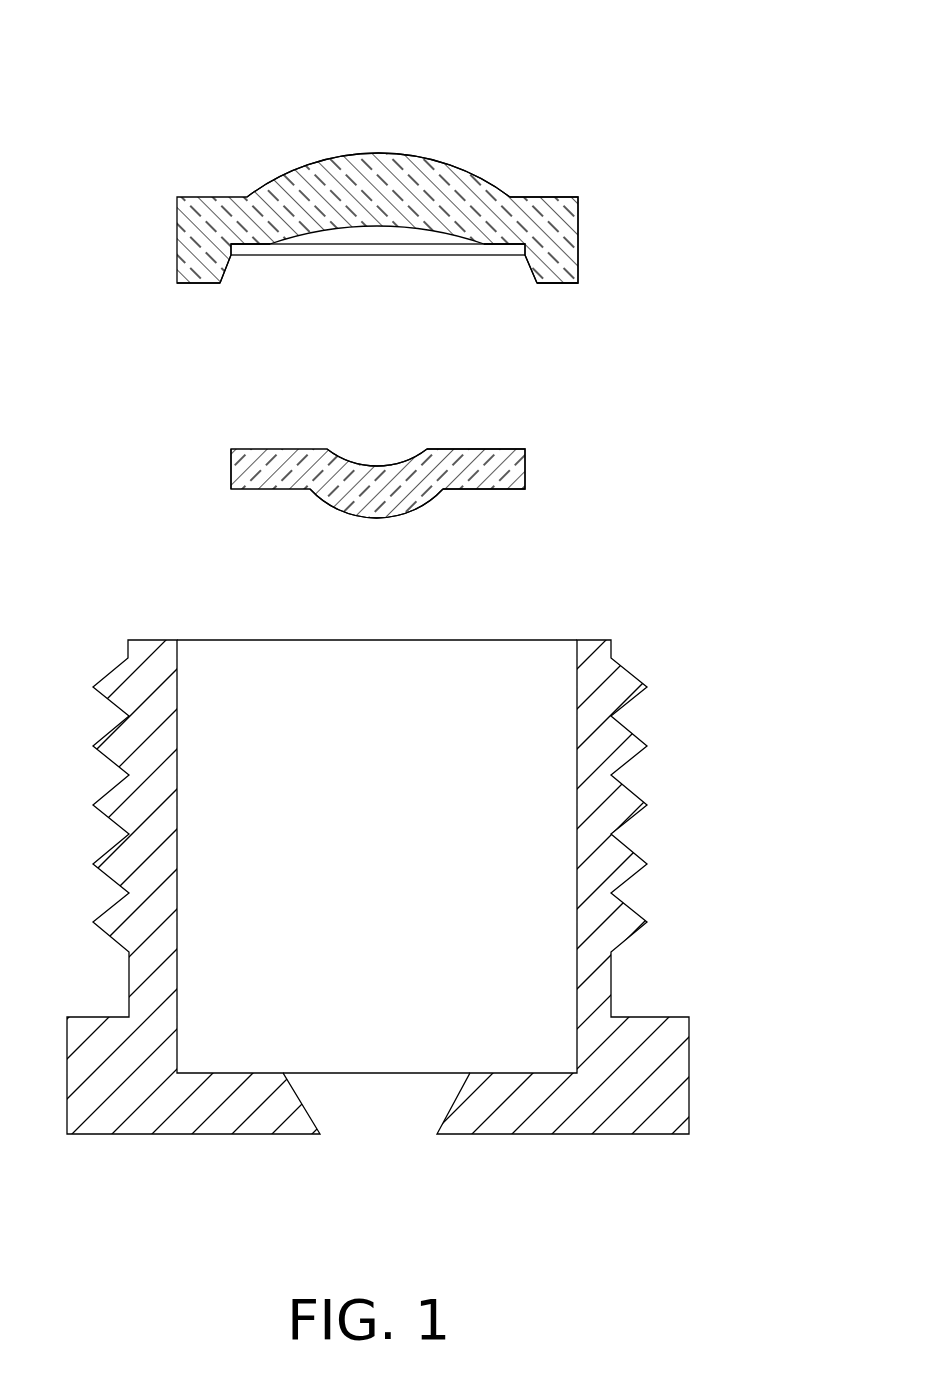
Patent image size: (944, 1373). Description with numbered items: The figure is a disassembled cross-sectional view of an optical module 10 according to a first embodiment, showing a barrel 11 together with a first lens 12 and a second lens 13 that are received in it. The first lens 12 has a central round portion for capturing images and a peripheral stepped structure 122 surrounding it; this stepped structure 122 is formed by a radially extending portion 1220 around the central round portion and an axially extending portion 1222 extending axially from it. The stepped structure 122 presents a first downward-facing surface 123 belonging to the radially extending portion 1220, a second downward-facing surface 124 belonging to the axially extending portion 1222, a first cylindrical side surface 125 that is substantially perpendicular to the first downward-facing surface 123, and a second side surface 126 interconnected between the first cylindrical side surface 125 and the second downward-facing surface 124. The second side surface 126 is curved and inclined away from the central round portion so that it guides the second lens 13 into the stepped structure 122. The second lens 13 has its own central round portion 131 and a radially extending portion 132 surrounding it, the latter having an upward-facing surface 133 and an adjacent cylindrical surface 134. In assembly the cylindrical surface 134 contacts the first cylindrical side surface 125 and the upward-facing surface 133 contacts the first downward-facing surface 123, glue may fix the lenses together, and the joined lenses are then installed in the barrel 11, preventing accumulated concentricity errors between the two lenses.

The optical module 10 is at (369, 21).
The barrel 11 is at (647, 1062).
The first lens 12 is at (513, 152).
The peripheral stepped structure 122 is at (512, 218).
The radially extending portion 1220 is at (513, 227).
The axially extending portion 1222 is at (555, 268).
The first downward-facing surface 123 is at (261, 247).
The second downward-facing surface 124 is at (553, 287).
The first cylindrical side surface 125 is at (522, 253).
The second side surface 126 is at (528, 270).
The second lens 13 is at (471, 509).
The central round portion 131 is at (393, 508).
The radially extending portion 132 is at (490, 452).
The upward-facing surface 133 is at (285, 447).
The cylindrical surface 134 is at (229, 470).